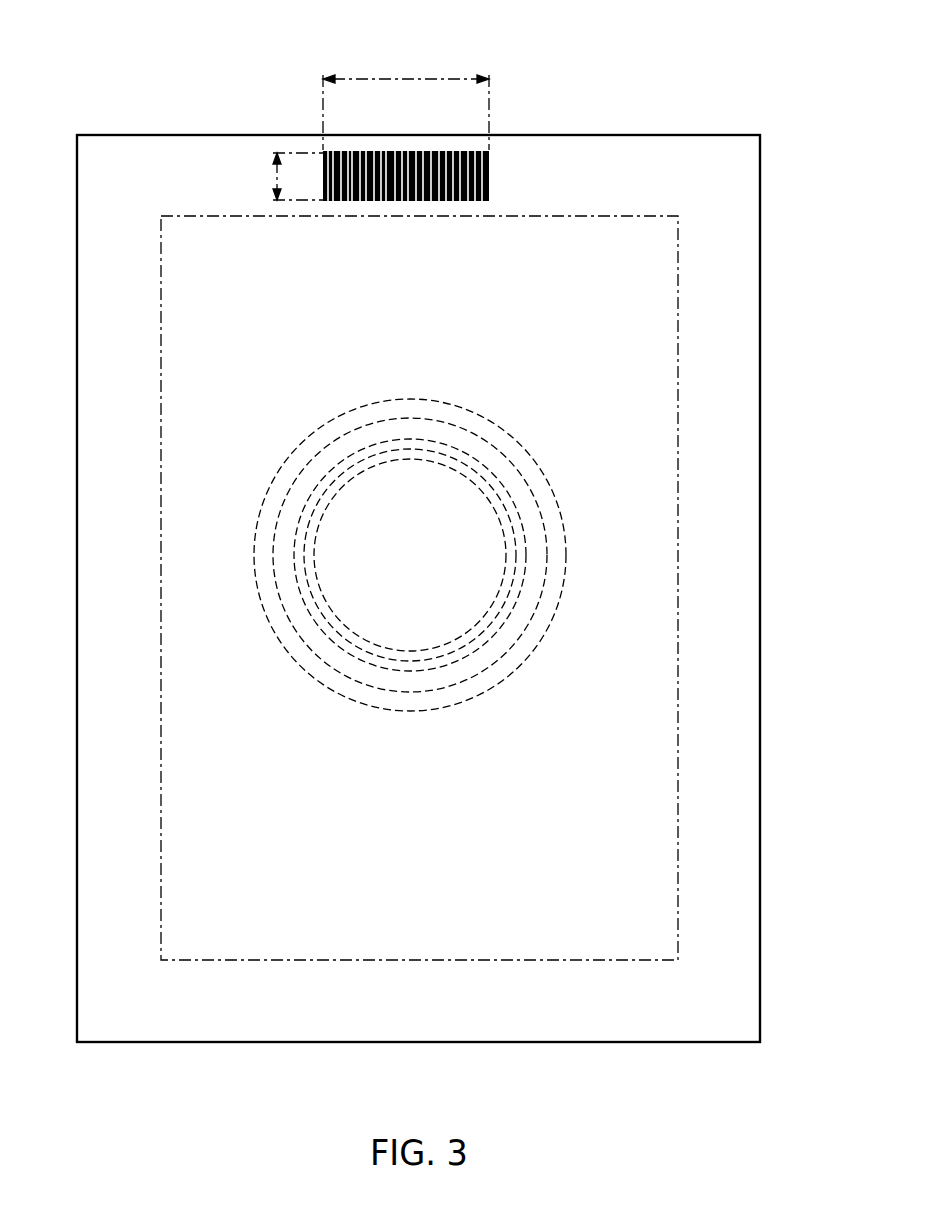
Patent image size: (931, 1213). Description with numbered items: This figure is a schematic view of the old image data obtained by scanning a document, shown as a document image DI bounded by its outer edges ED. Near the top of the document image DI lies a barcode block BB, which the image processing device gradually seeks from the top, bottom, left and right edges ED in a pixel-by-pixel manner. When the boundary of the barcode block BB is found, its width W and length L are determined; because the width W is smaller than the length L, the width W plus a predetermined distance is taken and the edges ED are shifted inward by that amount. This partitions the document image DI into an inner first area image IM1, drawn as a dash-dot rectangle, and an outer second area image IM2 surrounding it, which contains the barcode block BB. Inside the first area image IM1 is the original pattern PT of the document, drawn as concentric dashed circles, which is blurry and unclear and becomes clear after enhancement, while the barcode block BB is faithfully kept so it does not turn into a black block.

The document image DI is at (666, 134).
The second area image IM2 is at (108, 155).
The edges of the document image ED is at (287, 133).
The first area image IM1 is at (222, 230).
The barcode block BB is at (490, 158).
The length of the barcode block L is at (406, 96).
The width of the barcode block W is at (280, 176).
The original pattern PT is at (500, 428).